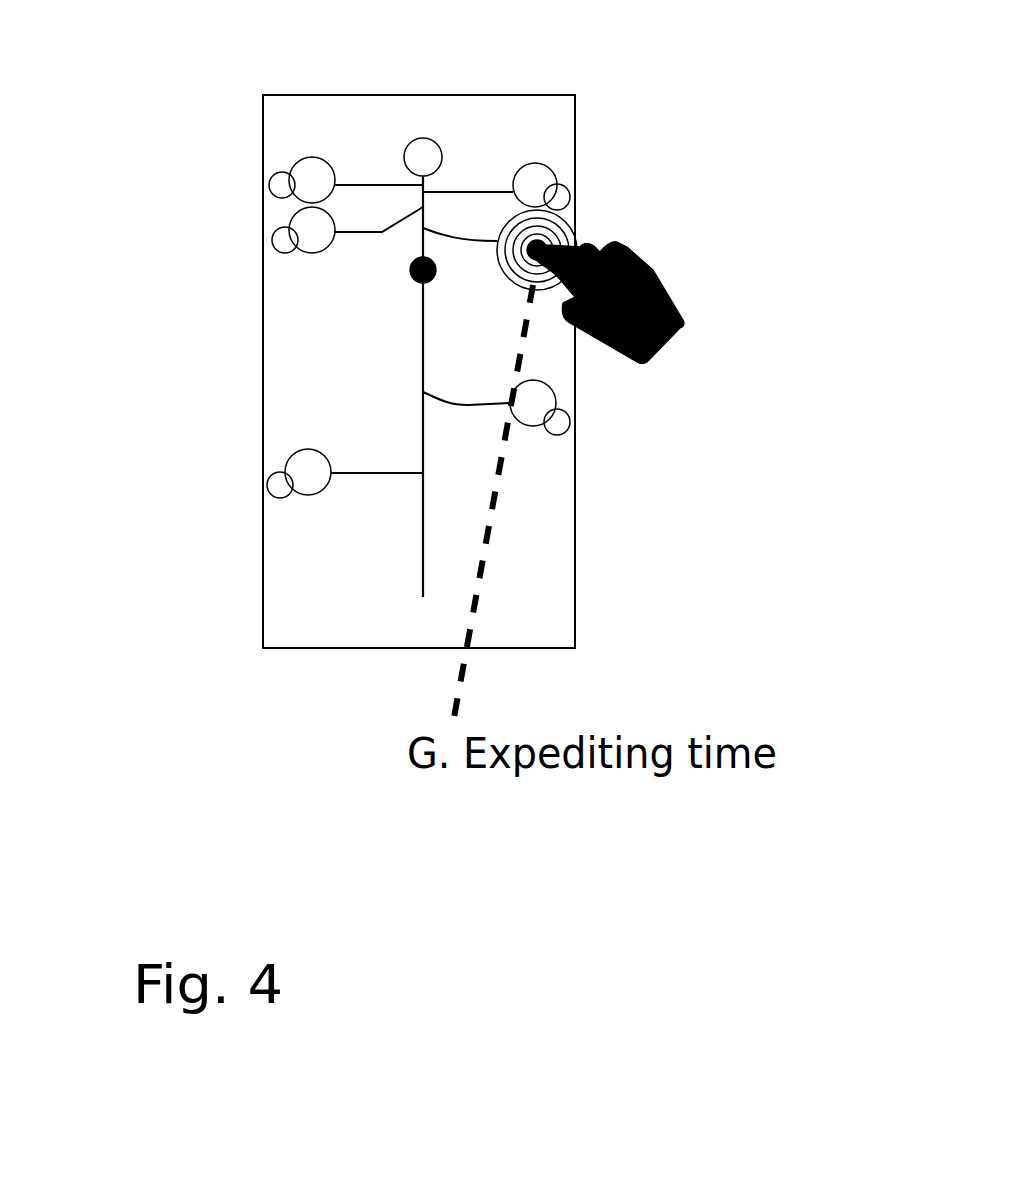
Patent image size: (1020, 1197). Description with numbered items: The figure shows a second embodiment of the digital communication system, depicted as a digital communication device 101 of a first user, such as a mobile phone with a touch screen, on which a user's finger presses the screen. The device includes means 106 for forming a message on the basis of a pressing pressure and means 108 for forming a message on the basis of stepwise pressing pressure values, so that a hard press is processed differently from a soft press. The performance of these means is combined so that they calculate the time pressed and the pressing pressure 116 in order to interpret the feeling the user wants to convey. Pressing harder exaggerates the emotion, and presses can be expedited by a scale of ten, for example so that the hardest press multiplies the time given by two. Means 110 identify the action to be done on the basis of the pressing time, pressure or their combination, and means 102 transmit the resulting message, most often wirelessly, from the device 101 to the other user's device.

The digital communication device 101 is at (575, 542).
The means for transmitting 102 is at (152, 235).
The means for forming a message on the basis of a pressing pressure 106 is at (632, 223).
The means for forming a message on the basis of stepwise pressing pressure values 108 is at (605, 302).
The means for identifying an action 110 is at (633, 83).
The pressing pressure 116 is at (577, 220).